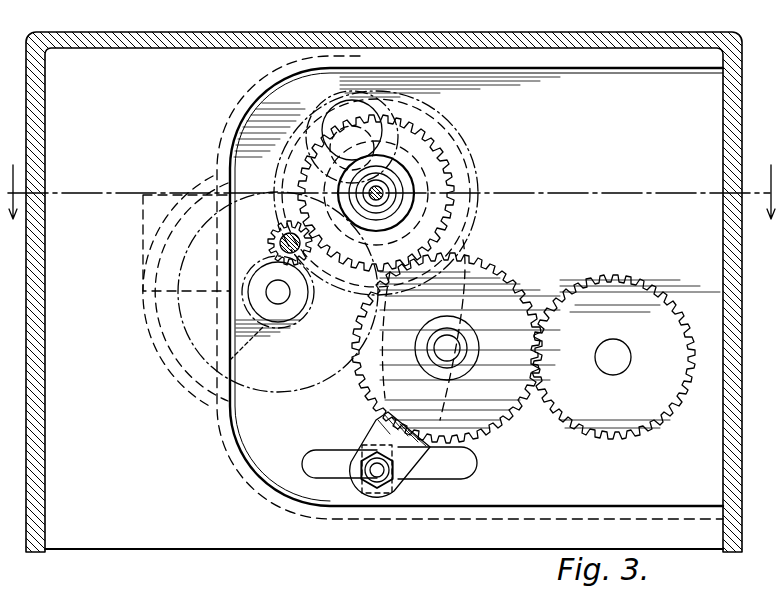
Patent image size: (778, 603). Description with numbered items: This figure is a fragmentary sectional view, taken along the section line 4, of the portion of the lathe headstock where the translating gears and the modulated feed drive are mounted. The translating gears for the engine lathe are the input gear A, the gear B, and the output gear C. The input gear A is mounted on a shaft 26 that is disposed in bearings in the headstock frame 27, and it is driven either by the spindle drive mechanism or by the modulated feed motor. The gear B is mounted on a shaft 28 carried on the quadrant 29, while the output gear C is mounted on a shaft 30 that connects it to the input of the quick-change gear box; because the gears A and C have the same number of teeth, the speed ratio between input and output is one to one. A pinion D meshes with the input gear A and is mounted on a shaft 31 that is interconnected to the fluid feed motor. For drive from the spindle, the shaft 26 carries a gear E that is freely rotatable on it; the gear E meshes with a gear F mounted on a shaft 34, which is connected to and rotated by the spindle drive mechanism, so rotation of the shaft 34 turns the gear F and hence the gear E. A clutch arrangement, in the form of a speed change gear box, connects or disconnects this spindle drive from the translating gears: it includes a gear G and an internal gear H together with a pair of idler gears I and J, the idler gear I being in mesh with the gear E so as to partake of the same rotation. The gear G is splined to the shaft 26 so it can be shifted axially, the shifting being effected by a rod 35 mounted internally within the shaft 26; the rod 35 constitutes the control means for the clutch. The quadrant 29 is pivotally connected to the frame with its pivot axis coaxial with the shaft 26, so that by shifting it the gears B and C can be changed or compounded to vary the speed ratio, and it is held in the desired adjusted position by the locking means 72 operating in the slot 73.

The section line 4 is at (388, 182).
The headstock frame 27 is at (741, 283).
The shaft 34 is at (262, 97).
The gear F is at (333, 135).
The gear G is at (443, 112).
The gear E is at (454, 124).
The internal gear H is at (455, 137).
The shaft 26 is at (395, 182).
The input gear A is at (453, 180).
The rod 35 is at (400, 202).
The pinion D is at (272, 230).
The shaft 31 is at (285, 243).
The idler gear I is at (180, 310).
The idler gear J is at (230, 360).
The gear B is at (447, 341).
The shaft 28 is at (450, 346).
The output gear C is at (632, 276).
The shaft 30 is at (625, 350).
The locking means 72 is at (377, 470).
The slot 73 is at (466, 455).
The quadrant 29 is at (395, 488).